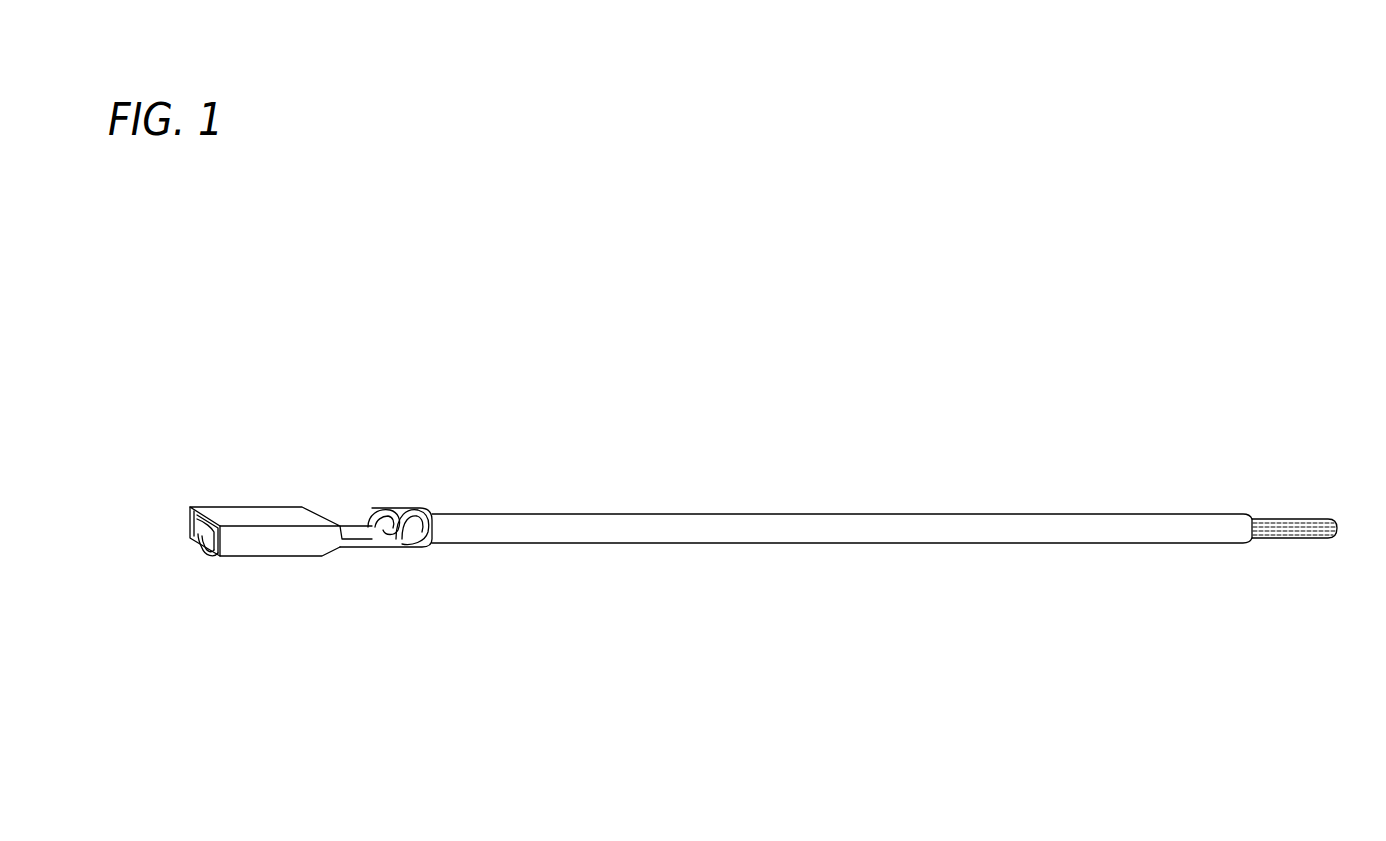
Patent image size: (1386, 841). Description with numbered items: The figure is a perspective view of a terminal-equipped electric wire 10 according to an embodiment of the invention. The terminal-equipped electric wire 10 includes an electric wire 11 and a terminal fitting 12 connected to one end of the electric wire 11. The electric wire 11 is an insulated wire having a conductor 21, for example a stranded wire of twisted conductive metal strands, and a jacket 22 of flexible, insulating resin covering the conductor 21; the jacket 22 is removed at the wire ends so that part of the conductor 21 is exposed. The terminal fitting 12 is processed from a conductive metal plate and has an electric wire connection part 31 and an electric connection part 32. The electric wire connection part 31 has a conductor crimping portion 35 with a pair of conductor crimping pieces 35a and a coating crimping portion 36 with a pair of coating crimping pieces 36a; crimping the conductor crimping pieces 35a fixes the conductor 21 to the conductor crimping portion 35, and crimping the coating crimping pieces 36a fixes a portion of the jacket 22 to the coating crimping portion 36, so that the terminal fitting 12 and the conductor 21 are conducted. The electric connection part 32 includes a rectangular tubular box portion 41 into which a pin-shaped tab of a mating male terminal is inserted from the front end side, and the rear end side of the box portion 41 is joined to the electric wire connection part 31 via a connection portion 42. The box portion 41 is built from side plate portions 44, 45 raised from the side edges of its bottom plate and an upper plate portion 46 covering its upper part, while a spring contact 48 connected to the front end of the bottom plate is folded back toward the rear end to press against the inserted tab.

The terminal-equipped electric wire 10 is at (750, 448).
The electric wire 11 is at (848, 513).
The terminal fitting 12 is at (280, 507).
The conductor 21 is at (1270, 522).
The jacket 22 is at (1063, 522).
The electric wire connection part 31 is at (390, 548).
The electric connection part 32 is at (260, 556).
The conductor crimping portion 35 is at (353, 548).
The conductor crimping pieces 35a is at (383, 515).
The coating crimping portion 36 is at (425, 548).
The coating crimping pieces 36a is at (427, 517).
The box portion 41 is at (212, 506).
The connection portion 42 is at (340, 556).
The side plate portion 44 is at (185, 520).
The side plate portion 45 is at (233, 545).
The upper plate portion 46 is at (250, 518).
The spring contact 48 is at (192, 543).